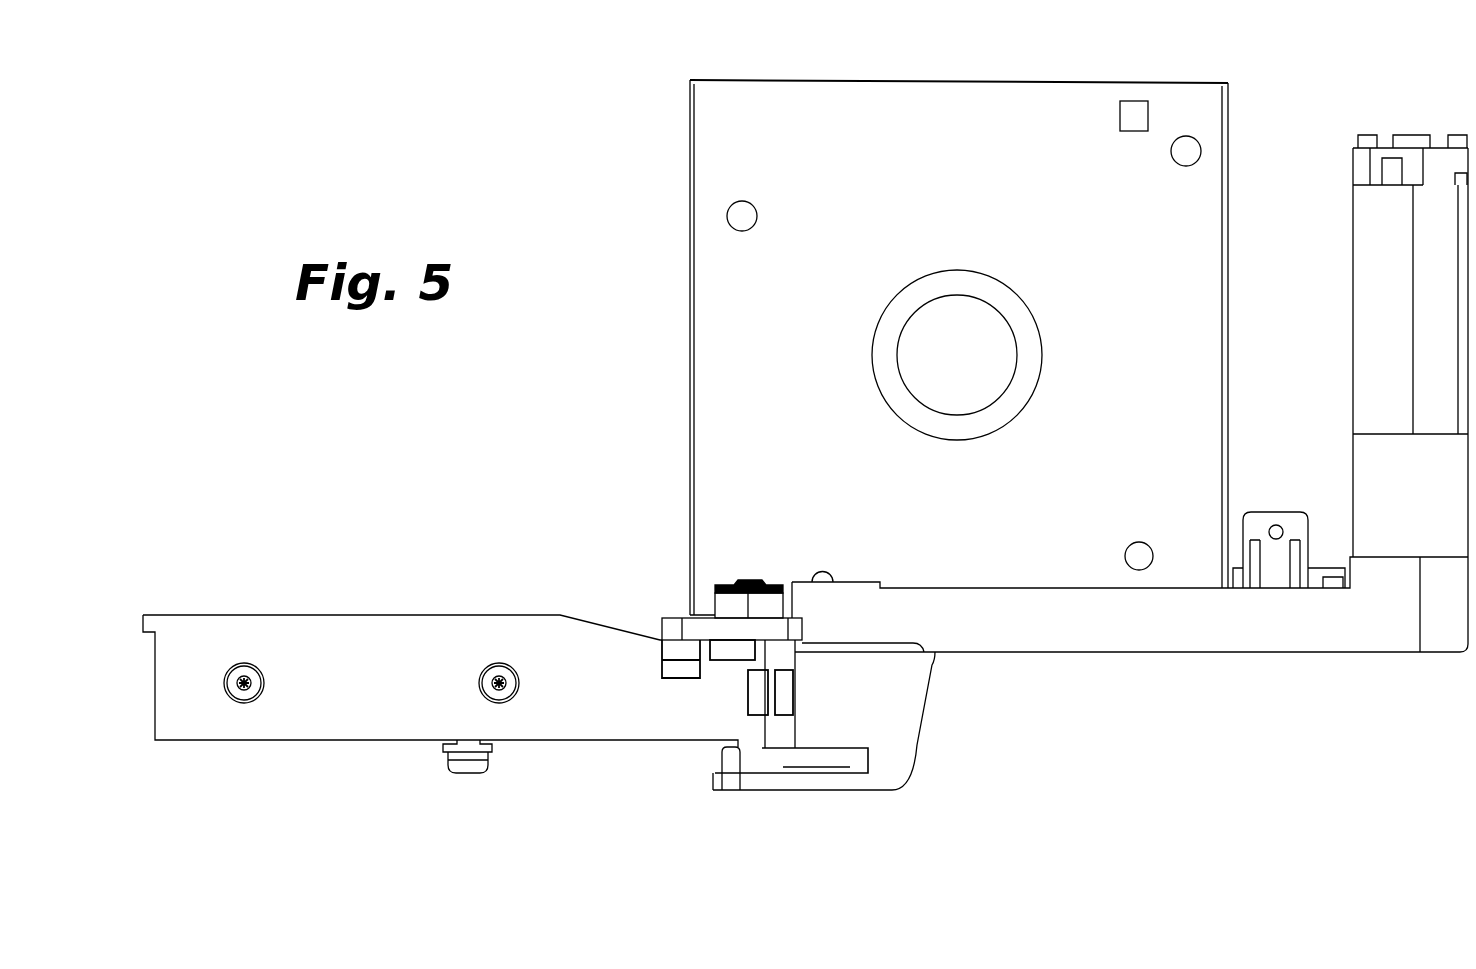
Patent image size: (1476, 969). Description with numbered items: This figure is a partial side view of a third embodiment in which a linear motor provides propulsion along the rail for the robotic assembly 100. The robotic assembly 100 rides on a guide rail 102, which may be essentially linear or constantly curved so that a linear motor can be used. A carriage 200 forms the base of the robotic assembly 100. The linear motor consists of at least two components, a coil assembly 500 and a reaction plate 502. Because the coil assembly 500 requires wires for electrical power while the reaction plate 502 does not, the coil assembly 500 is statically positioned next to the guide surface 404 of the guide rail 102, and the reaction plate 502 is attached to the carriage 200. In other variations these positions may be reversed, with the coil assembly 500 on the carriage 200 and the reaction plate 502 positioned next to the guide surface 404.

The robotic assembly 100 is at (1031, 64).
The guide rail 102 is at (318, 730).
The carriage 200 is at (1190, 638).
The guide surface 404 is at (762, 755).
The coil assembly 500 is at (750, 692).
The reaction plate 502 is at (780, 692).